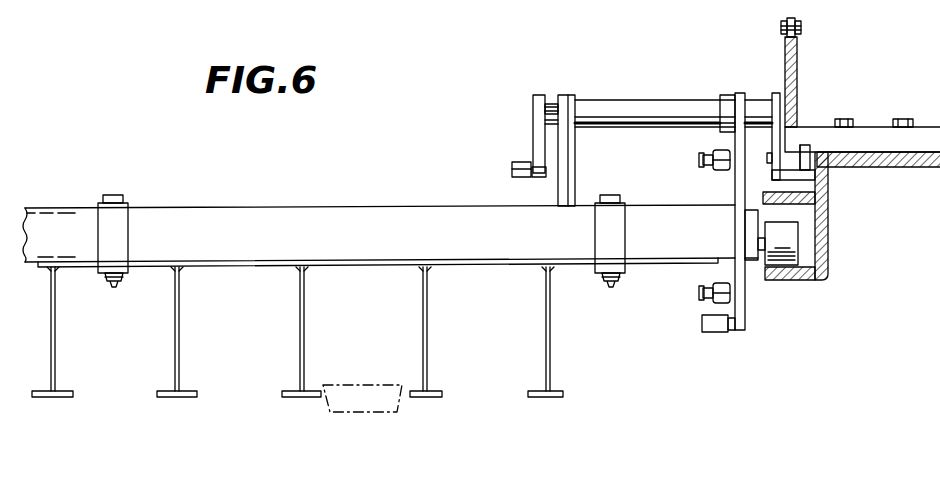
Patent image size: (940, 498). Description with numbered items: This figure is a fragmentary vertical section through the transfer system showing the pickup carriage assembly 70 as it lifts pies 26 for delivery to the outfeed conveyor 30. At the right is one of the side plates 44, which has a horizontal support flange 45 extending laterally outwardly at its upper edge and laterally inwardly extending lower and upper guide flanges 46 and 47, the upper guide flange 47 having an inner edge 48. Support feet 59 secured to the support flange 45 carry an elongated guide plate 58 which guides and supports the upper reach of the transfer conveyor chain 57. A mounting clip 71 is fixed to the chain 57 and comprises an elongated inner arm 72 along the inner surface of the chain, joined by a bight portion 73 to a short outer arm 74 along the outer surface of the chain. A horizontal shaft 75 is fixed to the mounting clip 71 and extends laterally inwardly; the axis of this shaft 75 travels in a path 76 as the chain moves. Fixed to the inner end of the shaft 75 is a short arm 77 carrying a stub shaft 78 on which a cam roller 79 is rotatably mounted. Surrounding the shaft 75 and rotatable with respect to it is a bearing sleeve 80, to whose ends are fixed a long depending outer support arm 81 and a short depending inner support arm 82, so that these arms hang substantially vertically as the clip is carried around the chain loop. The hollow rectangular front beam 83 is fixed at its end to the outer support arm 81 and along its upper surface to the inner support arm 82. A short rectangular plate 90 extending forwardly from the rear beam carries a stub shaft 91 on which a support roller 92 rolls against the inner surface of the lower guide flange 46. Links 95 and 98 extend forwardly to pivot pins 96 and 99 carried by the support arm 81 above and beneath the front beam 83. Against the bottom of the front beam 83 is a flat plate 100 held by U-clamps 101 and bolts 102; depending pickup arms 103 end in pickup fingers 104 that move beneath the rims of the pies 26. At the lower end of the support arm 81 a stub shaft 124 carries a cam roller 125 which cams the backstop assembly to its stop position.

The pies 26 is at (386, 406).
The outfeed conveyor 30 is at (567, 4).
The side plates 44 is at (829, 224).
The horizontal support flange 45 is at (893, 168).
The lower guide flange 46 is at (796, 281).
The upper guide flange 47 is at (815, 200).
The inner edges 48 is at (765, 197).
The transfer conveyor chain 57 is at (798, 19).
The guide plate 58 is at (798, 70).
The support feet 59 is at (878, 128).
The pickup carriage assembly 70 is at (441, 168).
The mounting clips 71 is at (774, 92).
The inner arm 72 is at (770, 100).
The bight portion 73 is at (810, 178).
The outer arm 74 is at (806, 145).
The horizontal shaft 75 is at (551, 103).
The path 76 is at (929, 305).
The short arm 77 is at (534, 131).
The stub shaft 78 is at (531, 173).
The cam roller 79 is at (512, 164).
The bearing sleeve 80 is at (648, 105).
The outer support arm 81 is at (738, 219).
The inner support arm 82 is at (571, 180).
The front beam 83 is at (311, 207).
The rectangular plates 90 is at (752, 264).
The stub shaft 91 is at (745, 241).
The support roller 92 is at (793, 241).
The link 95 is at (706, 151).
The pivot pin 96 is at (710, 160).
The link 98 is at (712, 284).
The pivot pin 99 is at (706, 296).
The plate 100 is at (251, 268).
The U-clamps 101 is at (130, 215).
The bolts 102 is at (113, 286).
The pickup arms 103 is at (424, 320).
The pickup finger 104 is at (283, 394).
The stub shaft 124 is at (731, 332).
The cam roller 125 is at (712, 334).